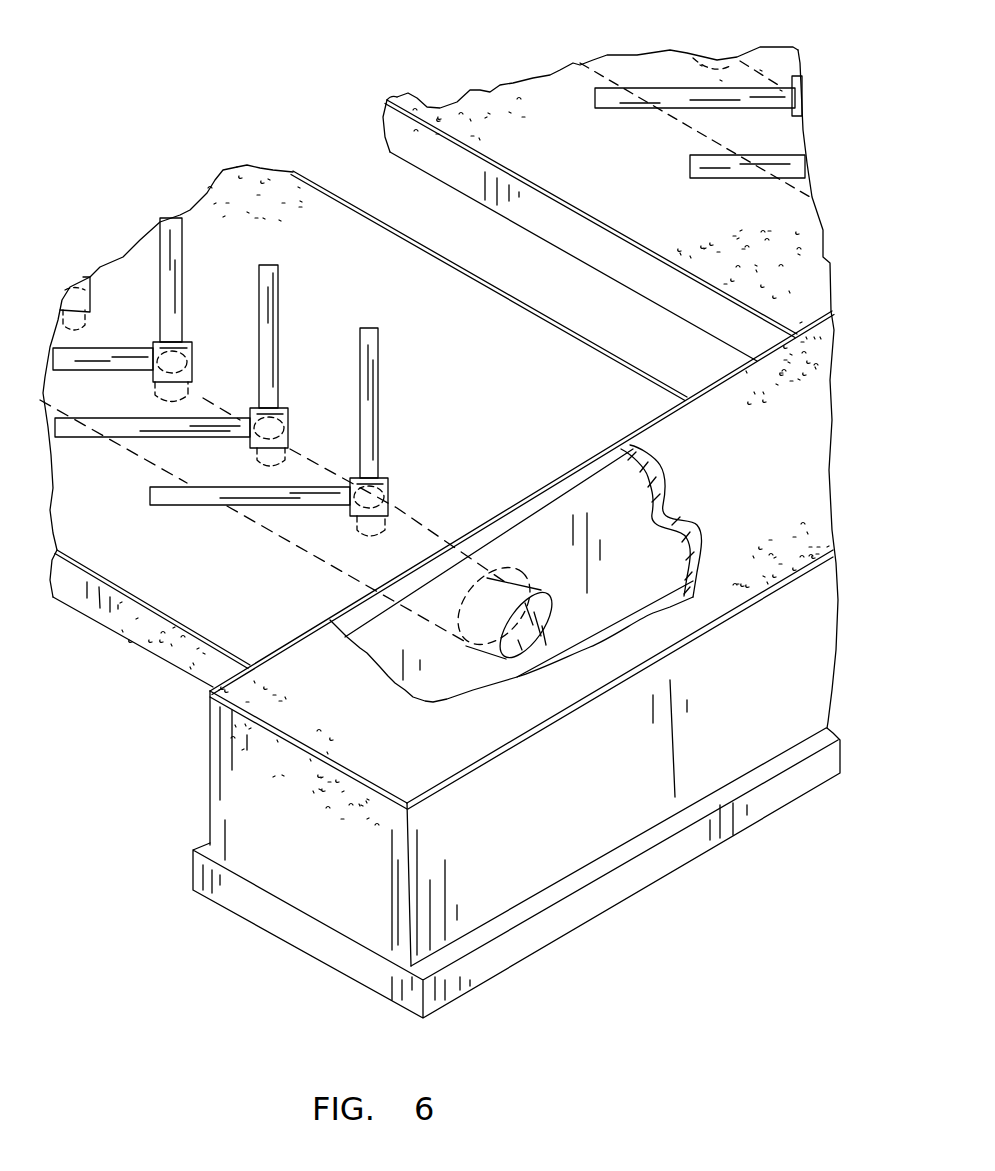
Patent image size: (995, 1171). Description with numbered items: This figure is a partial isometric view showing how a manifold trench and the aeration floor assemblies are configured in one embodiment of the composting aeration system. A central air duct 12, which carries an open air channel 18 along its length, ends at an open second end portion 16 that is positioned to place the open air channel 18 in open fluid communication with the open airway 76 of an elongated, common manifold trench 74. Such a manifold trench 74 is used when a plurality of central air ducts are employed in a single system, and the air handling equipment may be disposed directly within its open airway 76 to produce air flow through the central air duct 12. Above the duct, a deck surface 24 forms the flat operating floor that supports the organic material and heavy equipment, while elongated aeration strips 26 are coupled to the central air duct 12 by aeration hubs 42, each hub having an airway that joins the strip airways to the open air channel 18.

The central air duct 12 is at (550, 597).
The open second end portion 16 is at (514, 575).
The open air channel 18 is at (524, 650).
The deck surface 24 is at (552, 415).
The aeration strip 26 is at (381, 397).
The aeration hub 42 is at (289, 417).
The manifold trench 74 is at (470, 868).
The open airway 76 is at (630, 568).